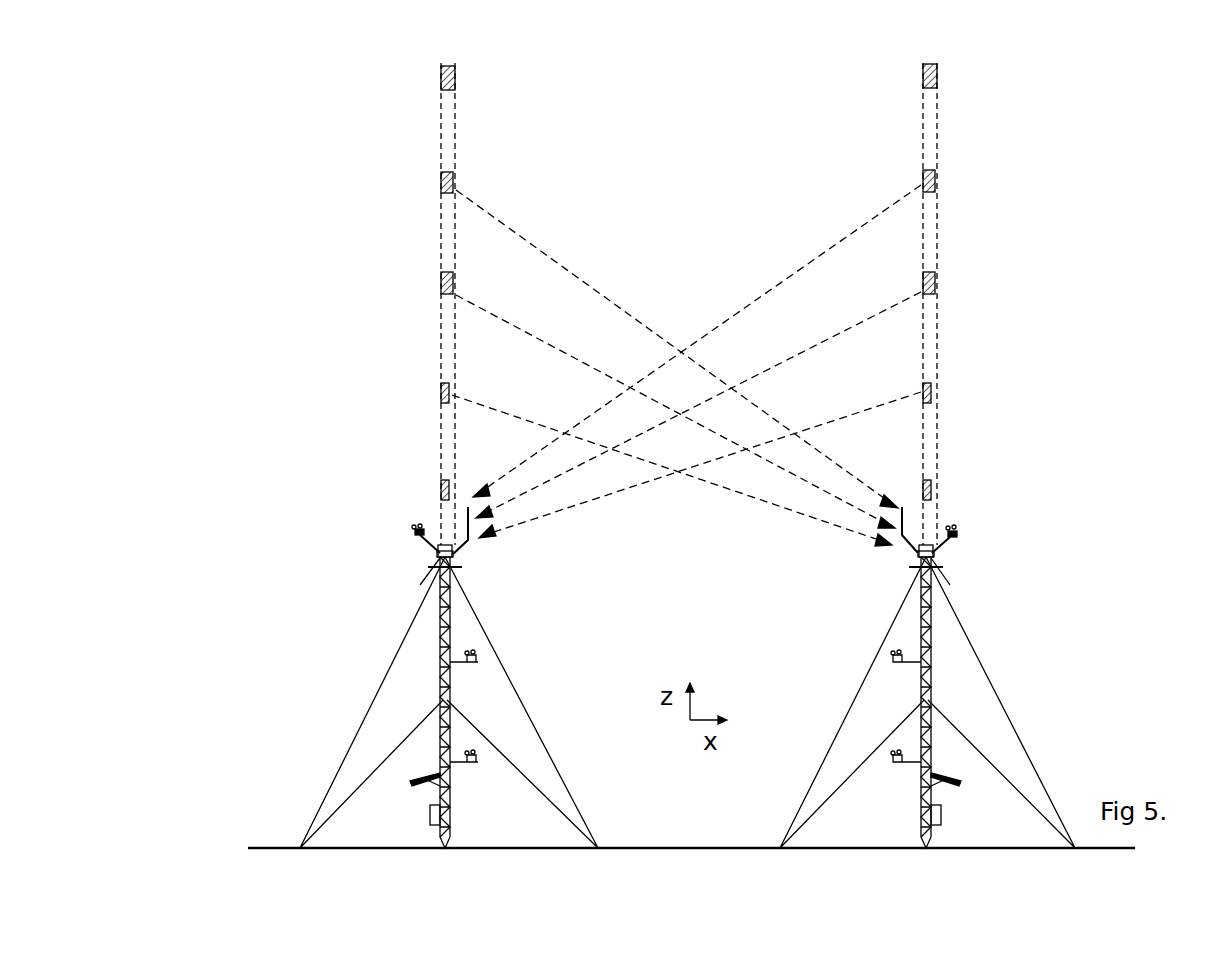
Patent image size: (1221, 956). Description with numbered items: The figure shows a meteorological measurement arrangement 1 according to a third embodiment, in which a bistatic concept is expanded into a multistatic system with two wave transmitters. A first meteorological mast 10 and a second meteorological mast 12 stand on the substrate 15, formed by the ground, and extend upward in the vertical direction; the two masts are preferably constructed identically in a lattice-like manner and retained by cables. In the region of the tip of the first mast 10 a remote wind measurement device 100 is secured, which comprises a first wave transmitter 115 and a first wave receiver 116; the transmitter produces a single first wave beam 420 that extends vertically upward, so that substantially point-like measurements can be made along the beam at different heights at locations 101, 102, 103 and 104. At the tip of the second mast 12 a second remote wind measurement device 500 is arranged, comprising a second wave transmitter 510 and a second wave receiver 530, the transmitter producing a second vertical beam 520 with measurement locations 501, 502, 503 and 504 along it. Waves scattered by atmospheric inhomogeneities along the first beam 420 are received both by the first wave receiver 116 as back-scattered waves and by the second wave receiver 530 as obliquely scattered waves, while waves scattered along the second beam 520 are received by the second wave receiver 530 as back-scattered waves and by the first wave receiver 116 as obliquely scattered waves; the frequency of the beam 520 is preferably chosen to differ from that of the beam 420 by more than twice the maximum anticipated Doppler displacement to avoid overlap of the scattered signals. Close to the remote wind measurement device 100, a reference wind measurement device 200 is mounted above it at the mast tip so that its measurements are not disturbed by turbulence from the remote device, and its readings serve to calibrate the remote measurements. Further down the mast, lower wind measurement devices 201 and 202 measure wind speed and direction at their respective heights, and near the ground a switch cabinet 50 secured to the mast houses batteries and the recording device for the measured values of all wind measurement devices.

The meteorological measurement arrangement 1 is at (228, 617).
The first meteorological mast 10 is at (931, 688).
The second meteorological mast 12 is at (440, 686).
The substrate 15 is at (698, 847).
The switch cabinet 50 is at (941, 818).
The remote wind measurement device 100 is at (932, 556).
The measurement location 101 is at (933, 490).
The measurement location 102 is at (933, 394).
The measurement location 103 is at (934, 290).
The measurement location 104 is at (934, 190).
The first wave transmitter 115 is at (931, 558).
The first wave receiver 116 is at (931, 560).
The reference wind measurement device 200 is at (418, 531).
The lower wind measurement device 201 is at (893, 658).
The lower wind measurement device 202 is at (895, 759).
The first wave beam 420 is at (946, 126).
The second remote wind measurement device 500 is at (438, 556).
The measurement location 501 is at (441, 491).
The measurement location 502 is at (441, 394).
The measurement location 503 is at (441, 290).
The measurement location 504 is at (441, 190).
The second wave transmitter 510 is at (440, 559).
The second wave beam 520 is at (428, 129).
The second wave receiver 530 is at (441, 561).